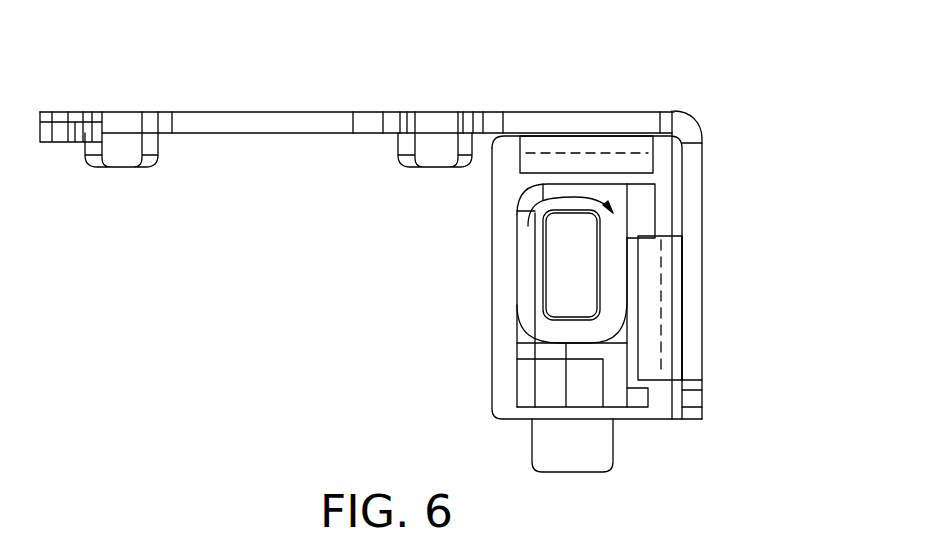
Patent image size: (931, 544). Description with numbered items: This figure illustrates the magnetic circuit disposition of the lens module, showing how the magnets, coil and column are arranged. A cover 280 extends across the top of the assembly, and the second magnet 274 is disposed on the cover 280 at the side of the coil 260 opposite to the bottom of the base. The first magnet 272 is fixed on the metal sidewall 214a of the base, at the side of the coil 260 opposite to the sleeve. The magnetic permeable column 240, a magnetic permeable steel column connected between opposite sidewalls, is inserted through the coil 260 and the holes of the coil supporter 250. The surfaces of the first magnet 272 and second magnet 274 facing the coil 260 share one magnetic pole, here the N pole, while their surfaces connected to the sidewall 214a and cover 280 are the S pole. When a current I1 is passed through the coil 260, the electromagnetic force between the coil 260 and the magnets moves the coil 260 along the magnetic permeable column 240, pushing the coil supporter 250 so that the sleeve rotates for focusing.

The cover 280 is at (275, 124).
The second magnet 274 is at (630, 143).
The sidewall 214a is at (690, 275).
The coil 260 is at (592, 333).
The magnetic permeable column 240 is at (573, 238).
The current I1 is at (552, 207).
The first magnet 272 is at (650, 262).
The coil supporter 250 is at (597, 352).